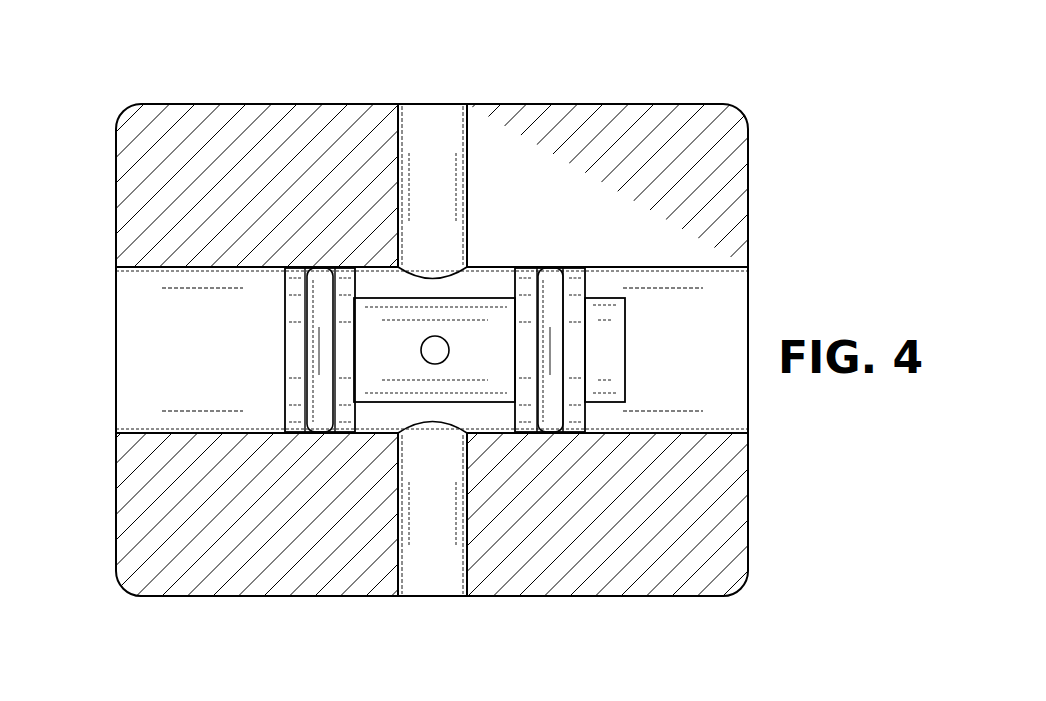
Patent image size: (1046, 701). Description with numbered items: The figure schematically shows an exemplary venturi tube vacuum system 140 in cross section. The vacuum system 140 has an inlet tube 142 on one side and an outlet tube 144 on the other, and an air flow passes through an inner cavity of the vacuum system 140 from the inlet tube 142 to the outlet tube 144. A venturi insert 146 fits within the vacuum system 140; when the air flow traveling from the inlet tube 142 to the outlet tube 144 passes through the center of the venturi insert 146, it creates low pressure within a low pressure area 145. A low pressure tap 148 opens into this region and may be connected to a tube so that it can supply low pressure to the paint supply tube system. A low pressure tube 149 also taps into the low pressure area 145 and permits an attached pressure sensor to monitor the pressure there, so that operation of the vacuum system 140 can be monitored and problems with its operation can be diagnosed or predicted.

The vacuum system 140 is at (632, 115).
The inlet tube 142 is at (116, 292).
The outlet tube 144 is at (748, 297).
The low pressure area 145 is at (377, 418).
The venturi insert 146 is at (285, 380).
The low pressure tap 148 is at (432, 596).
The low pressure tube 149 is at (425, 115).